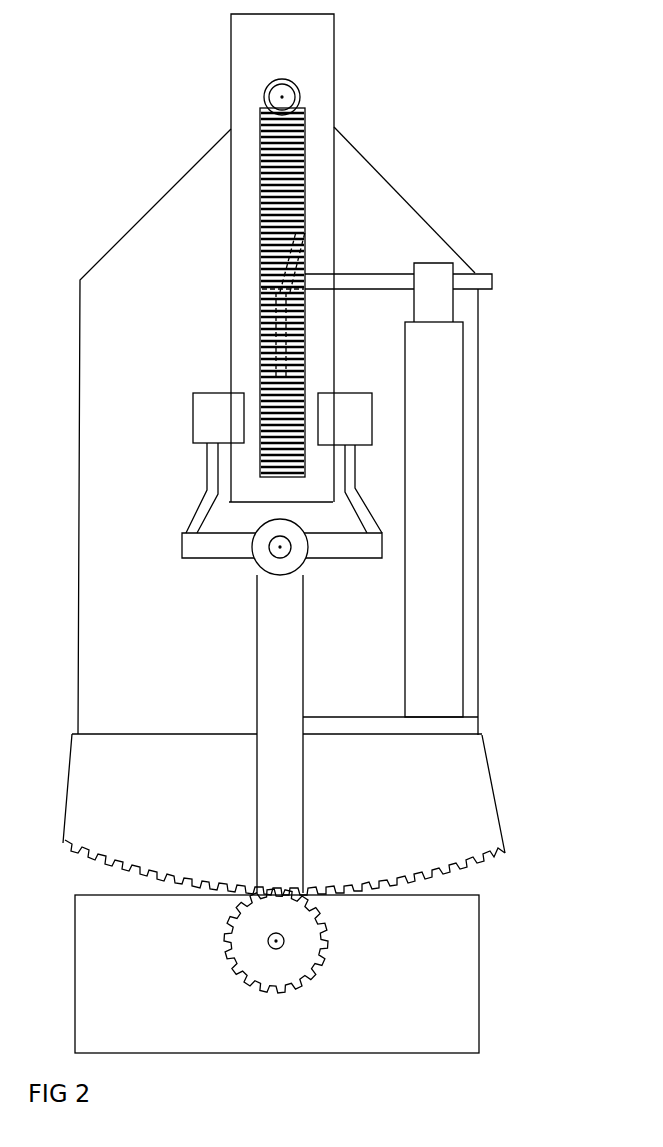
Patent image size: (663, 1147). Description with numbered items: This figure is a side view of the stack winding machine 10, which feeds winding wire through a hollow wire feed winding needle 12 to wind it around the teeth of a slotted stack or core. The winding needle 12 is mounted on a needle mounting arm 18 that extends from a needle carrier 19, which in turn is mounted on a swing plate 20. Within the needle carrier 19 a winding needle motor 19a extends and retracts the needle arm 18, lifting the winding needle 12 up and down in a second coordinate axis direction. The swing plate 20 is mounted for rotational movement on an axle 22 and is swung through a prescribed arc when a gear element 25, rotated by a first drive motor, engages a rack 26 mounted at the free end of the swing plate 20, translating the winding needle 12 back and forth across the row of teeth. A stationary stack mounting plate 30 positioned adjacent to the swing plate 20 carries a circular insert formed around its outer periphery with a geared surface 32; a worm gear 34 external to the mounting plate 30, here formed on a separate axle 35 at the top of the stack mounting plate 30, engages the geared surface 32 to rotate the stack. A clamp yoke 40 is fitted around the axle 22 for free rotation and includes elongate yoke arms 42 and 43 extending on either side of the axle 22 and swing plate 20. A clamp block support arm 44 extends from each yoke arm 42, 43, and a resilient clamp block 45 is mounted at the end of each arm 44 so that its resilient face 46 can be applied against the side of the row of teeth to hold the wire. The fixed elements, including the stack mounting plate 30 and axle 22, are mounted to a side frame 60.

The stack winding machine 10 is at (70, 73).
The winding needle 12 is at (305, 258).
The needle mounting arm 18 is at (464, 410).
The needle carrier 19 is at (479, 725).
The winding needle motor 19a is at (472, 882).
The swing plate 20 is at (258, 718).
The axle 22 is at (286, 550).
The gear element 25 is at (330, 935).
The rack 26 is at (498, 820).
The stack mounting plate 30 is at (336, 44).
The geared surface 32 is at (305, 135).
The worm gear 34 is at (266, 90).
The separate axle 35 is at (284, 98).
The clamp yoke 40 is at (257, 566).
The yoke arm 42 is at (182, 537).
The yoke arm 43 is at (382, 545).
The clamp block support arm 44 is at (203, 502).
The clamp block 45 is at (204, 393).
The resilient face 46 is at (319, 400).
The side frame 60 is at (170, 276).